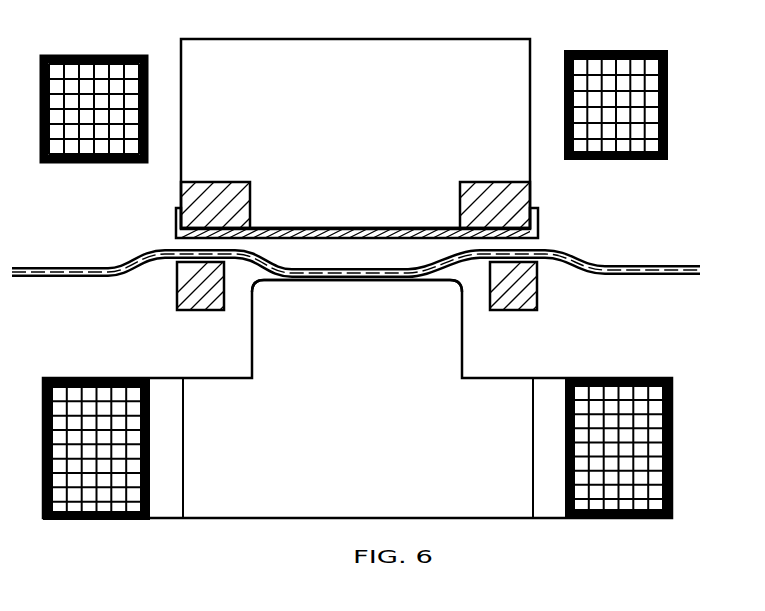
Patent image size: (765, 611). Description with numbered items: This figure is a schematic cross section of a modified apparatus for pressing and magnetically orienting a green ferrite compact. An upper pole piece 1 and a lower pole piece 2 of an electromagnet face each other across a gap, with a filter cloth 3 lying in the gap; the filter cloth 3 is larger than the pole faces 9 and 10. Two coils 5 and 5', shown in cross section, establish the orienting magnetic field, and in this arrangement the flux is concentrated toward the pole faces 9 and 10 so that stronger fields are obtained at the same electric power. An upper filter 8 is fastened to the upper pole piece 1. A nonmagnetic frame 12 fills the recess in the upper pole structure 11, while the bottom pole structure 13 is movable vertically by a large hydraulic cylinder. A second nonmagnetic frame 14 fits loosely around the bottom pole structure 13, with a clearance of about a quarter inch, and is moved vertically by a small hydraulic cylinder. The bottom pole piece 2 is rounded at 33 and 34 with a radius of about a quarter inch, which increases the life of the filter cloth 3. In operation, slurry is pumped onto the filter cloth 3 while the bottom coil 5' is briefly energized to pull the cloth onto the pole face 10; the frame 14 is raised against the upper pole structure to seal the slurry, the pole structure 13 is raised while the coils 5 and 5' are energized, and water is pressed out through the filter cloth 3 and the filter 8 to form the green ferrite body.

The upper pole piece 1 is at (508, 47).
The lower pole piece 2 is at (447, 353).
The filter cloth 3 is at (677, 264).
The coil 5 is at (631, 105).
The coil 5' is at (637, 448).
The upper filter 8 is at (539, 227).
The pole face 9 is at (382, 228).
The pole face 10 is at (368, 283).
The pole structure 11 is at (181, 193).
The nonmagnetic frame 12 is at (511, 203).
The pole structure 13 is at (252, 342).
The nonmagnetic frame 14 is at (515, 289).
The radius of curvature 33 is at (456, 289).
The radius of curvature 34 is at (259, 291).